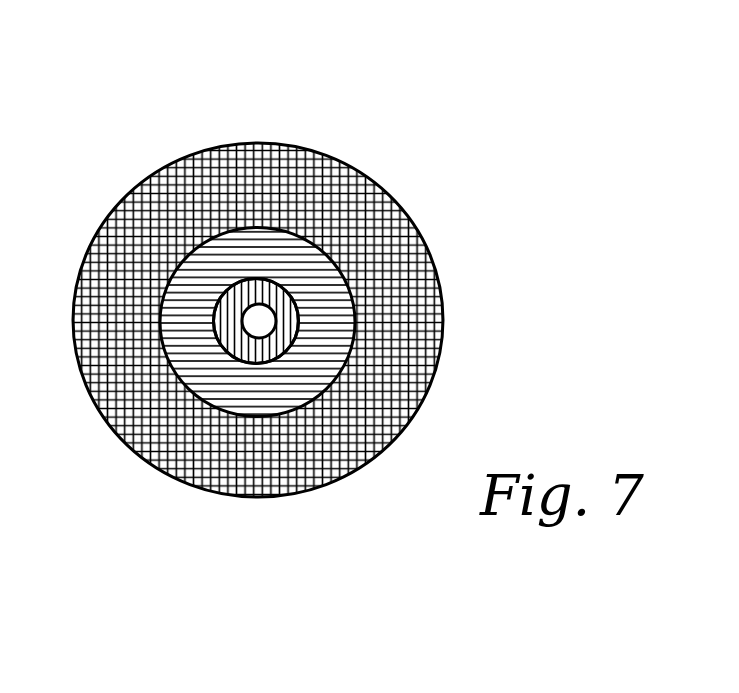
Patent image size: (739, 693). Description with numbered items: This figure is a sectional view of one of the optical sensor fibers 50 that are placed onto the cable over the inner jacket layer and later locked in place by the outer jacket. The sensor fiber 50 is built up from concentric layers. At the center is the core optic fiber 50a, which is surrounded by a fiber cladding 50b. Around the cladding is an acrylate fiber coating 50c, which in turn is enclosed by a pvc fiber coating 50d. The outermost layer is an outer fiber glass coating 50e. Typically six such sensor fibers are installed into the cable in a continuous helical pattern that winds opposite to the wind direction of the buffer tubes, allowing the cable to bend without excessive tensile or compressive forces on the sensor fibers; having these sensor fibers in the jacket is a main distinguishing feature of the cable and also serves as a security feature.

The sensor fiber 50 is at (235, 142).
The core optic fiber 50a is at (269, 319).
The fiber cladding 50b is at (220, 281).
The acrylate fiber coating 50c is at (302, 297).
The pvc fiber coating 50d is at (313, 357).
The outer fiber glass coating 50e is at (442, 300).